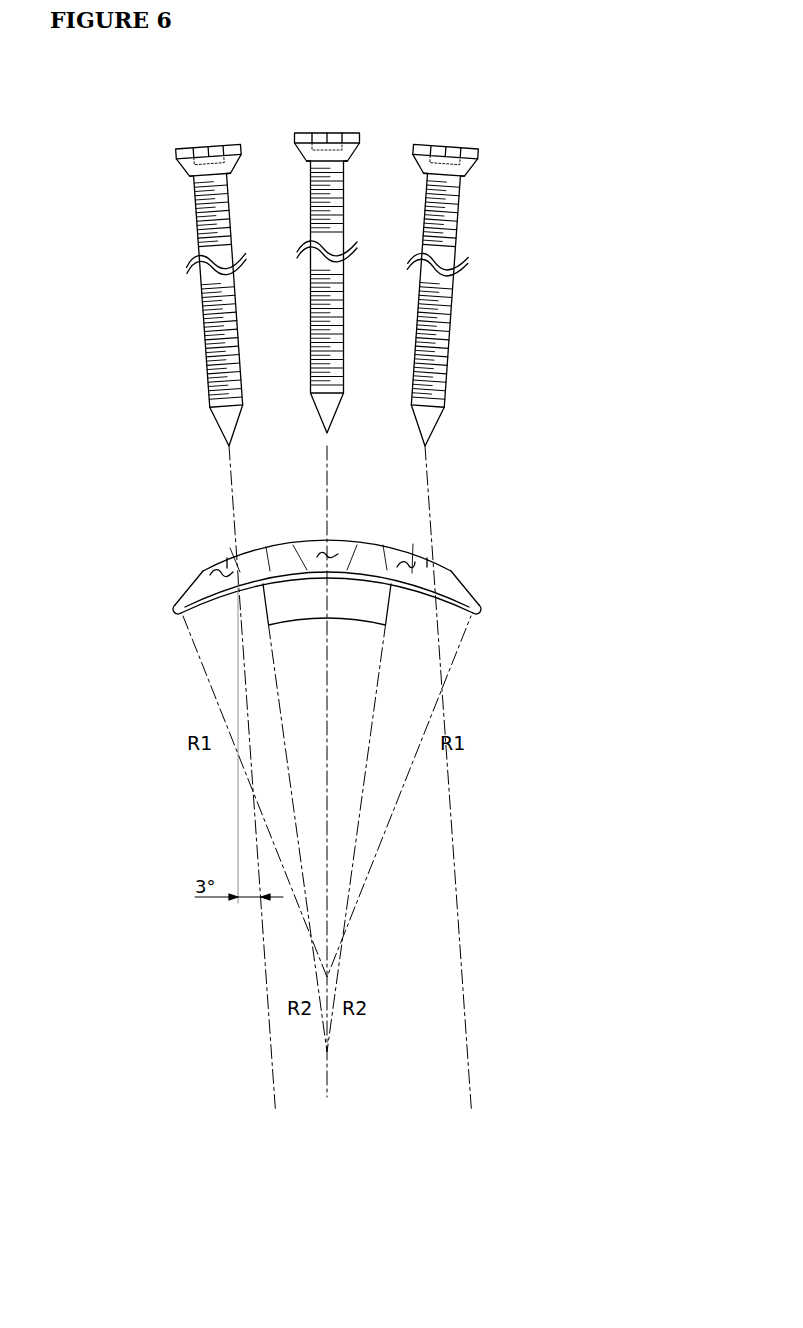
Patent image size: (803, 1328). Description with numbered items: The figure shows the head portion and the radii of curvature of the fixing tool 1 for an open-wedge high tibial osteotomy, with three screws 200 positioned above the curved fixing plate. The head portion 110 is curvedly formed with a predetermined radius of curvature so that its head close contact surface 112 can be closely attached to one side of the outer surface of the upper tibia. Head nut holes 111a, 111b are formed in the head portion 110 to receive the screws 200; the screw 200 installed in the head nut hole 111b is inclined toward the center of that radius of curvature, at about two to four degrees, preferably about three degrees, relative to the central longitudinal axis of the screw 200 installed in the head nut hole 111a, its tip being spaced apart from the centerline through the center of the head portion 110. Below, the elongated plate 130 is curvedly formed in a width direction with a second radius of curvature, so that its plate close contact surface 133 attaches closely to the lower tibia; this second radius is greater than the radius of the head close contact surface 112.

The fixing tool 1 is at (90, 83).
The screw 200 is at (348, 135).
The head portion 110 is at (350, 563).
The elongated plate 130 is at (203, 577).
The head close contact surface 112 is at (440, 597).
The head nut hole 111a is at (327, 541).
The head nut hole 111b is at (228, 560).
The plate close contact surface 133 is at (295, 602).